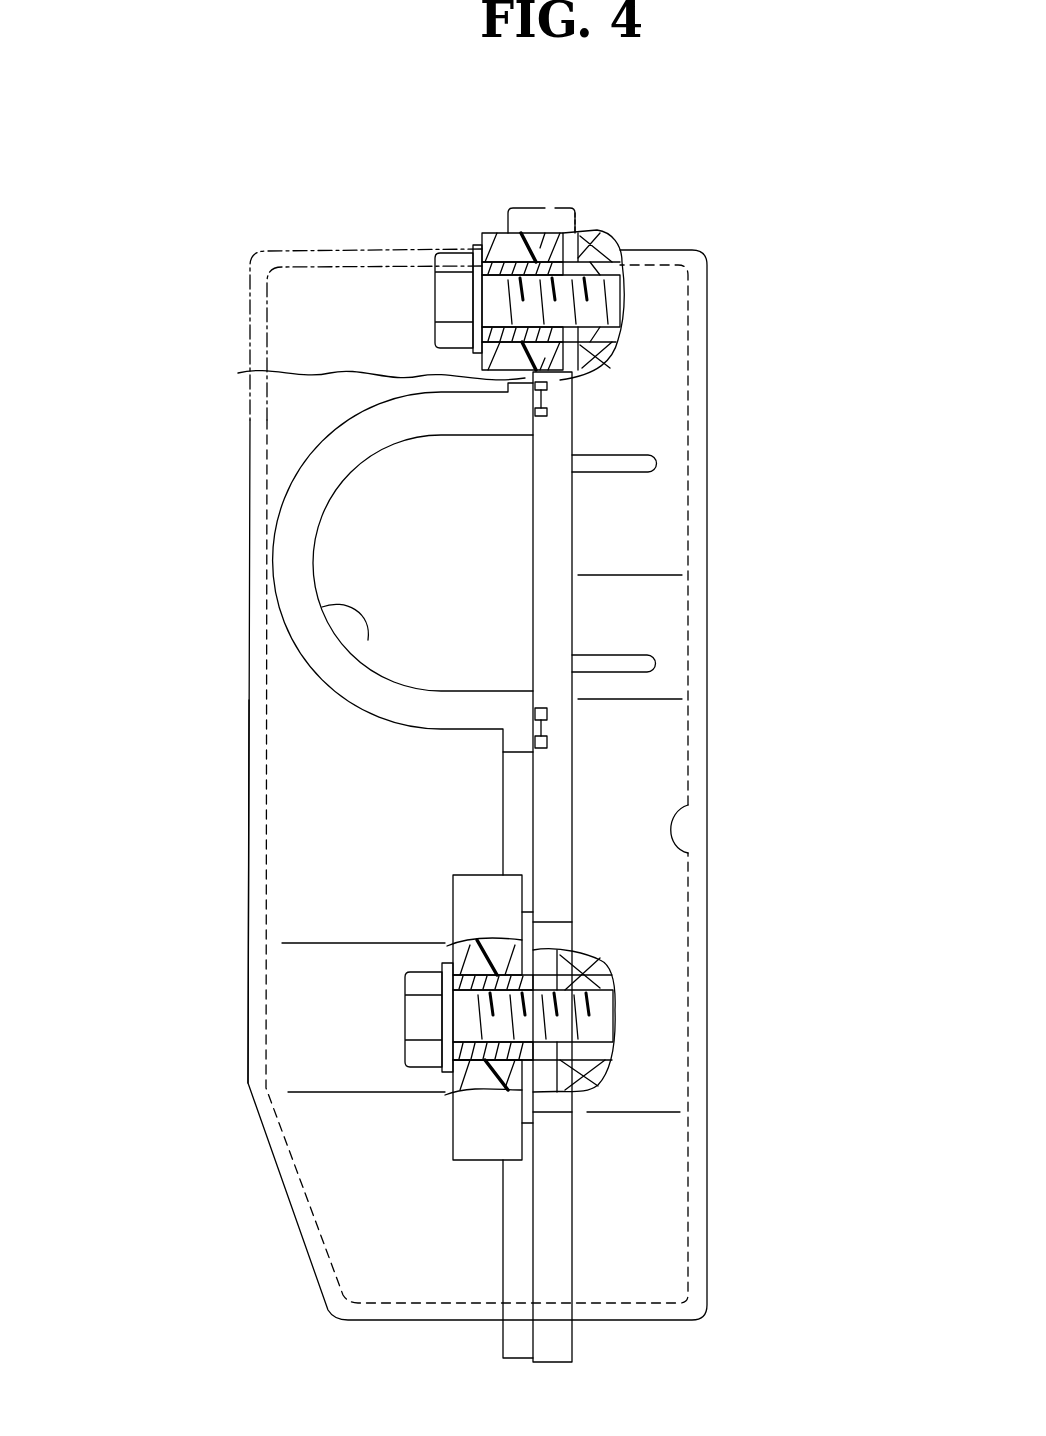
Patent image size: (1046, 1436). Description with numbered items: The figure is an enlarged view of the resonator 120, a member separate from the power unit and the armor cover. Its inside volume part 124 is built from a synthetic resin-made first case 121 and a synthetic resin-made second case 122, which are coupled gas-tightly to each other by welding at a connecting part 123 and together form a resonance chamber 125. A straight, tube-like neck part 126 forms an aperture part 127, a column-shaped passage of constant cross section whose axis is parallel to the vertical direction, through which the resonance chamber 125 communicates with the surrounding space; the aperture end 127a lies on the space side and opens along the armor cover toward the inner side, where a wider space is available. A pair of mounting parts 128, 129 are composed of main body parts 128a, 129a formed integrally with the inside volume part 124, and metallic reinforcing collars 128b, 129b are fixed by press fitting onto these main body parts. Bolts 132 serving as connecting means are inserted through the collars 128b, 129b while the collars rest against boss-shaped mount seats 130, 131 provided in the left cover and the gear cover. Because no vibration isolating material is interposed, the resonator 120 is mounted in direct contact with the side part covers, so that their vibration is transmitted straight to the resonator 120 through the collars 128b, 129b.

The resonator 120 is at (279, 207).
The first case 121 is at (295, 959).
The second case 122 is at (658, 1007).
The connecting part 123 is at (535, 820).
The inside volume part 124 is at (237, 827).
The resonance chamber 125 is at (687, 807).
The neck part 126 is at (284, 482).
The aperture part 127 is at (368, 640).
The aperture end 127a is at (460, 632).
The mounting part 128 is at (551, 220).
The main body part 128a is at (513, 357).
The collar 128b is at (570, 345).
The mounting part 129 is at (436, 1156).
The main body part 129a is at (470, 918).
The collar 129b is at (537, 978).
The mount seat 130 is at (600, 262).
The mount seat 131 is at (572, 1070).
The bolt 132 is at (458, 300).